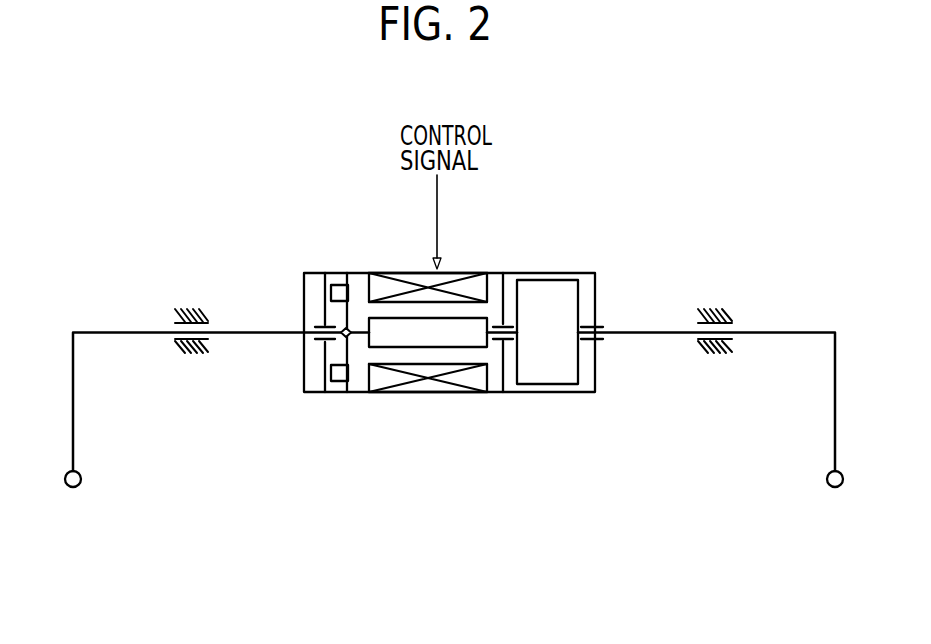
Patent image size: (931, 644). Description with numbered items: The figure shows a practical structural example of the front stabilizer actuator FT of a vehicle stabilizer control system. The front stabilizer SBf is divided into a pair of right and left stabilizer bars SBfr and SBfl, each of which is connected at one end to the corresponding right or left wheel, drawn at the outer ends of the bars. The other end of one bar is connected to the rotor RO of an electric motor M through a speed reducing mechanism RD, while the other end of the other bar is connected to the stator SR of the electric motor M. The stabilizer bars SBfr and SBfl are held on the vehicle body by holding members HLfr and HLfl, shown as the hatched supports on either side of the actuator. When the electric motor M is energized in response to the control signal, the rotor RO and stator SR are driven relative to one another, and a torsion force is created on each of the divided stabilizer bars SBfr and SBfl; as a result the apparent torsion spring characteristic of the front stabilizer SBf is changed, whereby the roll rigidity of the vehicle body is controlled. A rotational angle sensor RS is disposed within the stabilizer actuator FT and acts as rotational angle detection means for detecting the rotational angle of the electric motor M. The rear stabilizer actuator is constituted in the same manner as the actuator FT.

The electric motor M is at (377, 392).
The stator SR is at (390, 275).
The rotor RO is at (488, 317).
The rotational angle sensor RS is at (342, 381).
The stabilizer actuator FT is at (553, 274).
The speed reducing mechanism RD is at (555, 385).
The front stabilizer SBf is at (630, 388).
The left stabilizer bar SBfl is at (109, 337).
The right stabilizer bar SBfr is at (630, 337).
The holding member HLfl is at (191, 317).
The holding member HLfr is at (717, 317).